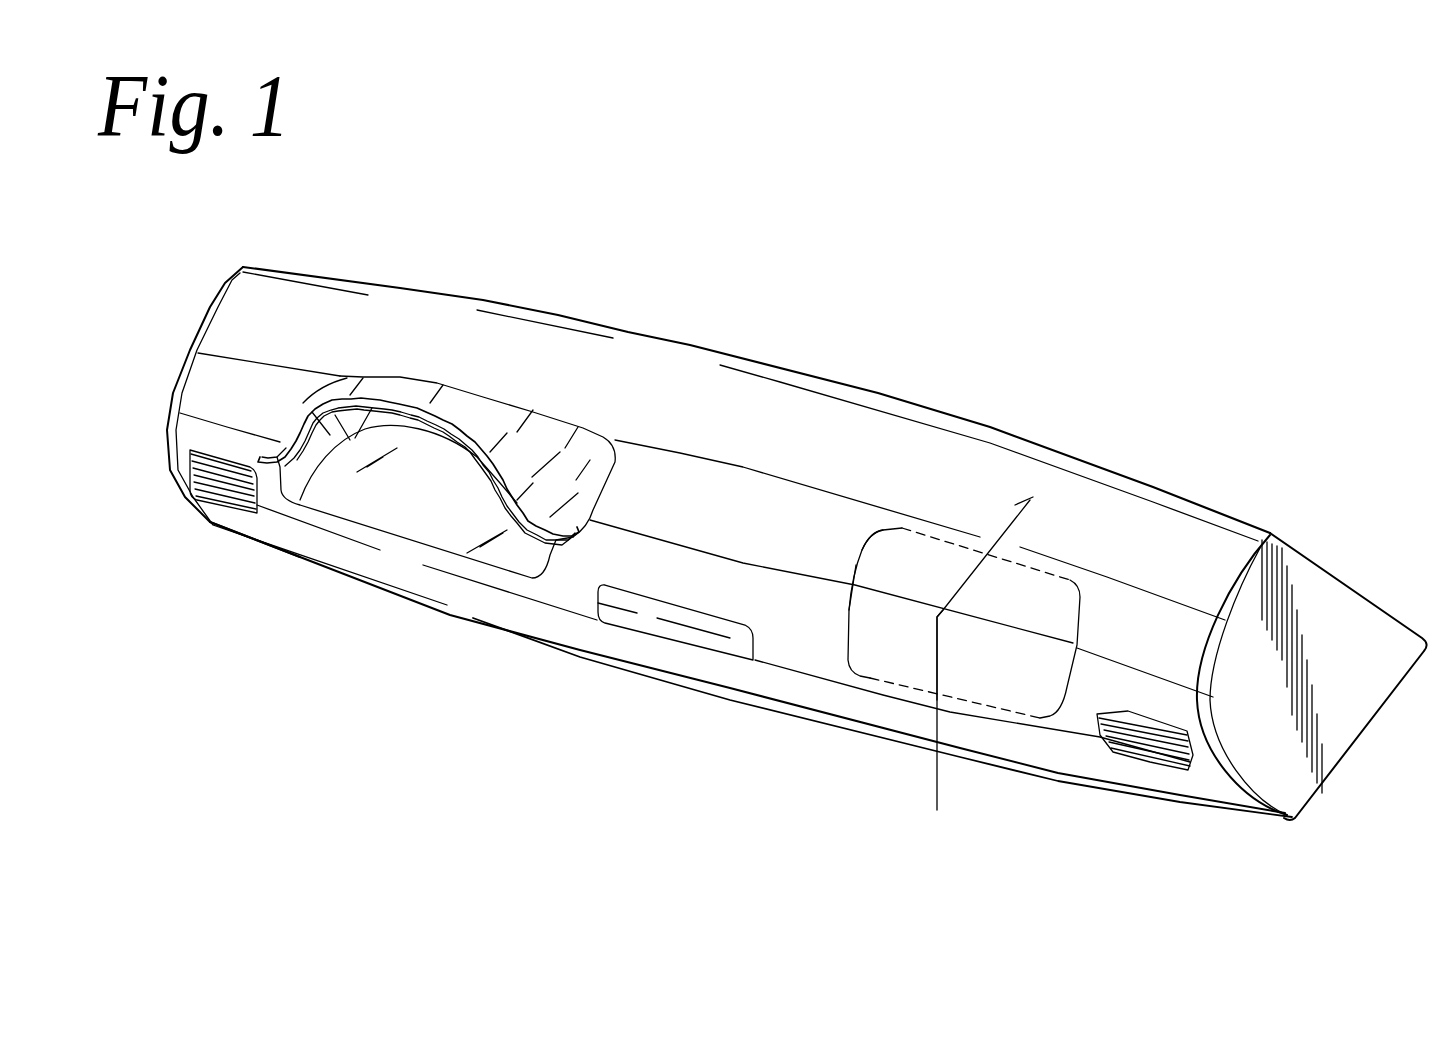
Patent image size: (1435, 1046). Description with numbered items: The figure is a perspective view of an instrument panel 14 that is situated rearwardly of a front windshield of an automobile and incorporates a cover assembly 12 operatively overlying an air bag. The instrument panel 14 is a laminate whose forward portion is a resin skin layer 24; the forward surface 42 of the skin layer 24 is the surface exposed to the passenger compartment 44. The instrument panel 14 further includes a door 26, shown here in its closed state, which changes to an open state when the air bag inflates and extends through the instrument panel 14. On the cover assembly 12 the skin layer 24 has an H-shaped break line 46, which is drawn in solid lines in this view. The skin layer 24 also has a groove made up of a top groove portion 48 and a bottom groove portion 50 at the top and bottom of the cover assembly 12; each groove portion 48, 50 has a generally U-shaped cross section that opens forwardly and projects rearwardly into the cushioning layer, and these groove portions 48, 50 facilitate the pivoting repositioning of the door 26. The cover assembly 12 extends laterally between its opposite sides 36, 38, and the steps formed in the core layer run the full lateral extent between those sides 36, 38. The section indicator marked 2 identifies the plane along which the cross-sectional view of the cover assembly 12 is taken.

The cover assembly 12 is at (1094, 583).
The instrument panel 14 is at (399, 325).
The skin layer 24 is at (953, 582).
The door 26 is at (996, 697).
The opposite side 36 is at (846, 574).
The opposite side 38 is at (1150, 764).
The forward surface 42 is at (685, 367).
The passenger compartment 44 is at (773, 906).
The H-shaped break line 46 is at (890, 593).
The groove portion 48 is at (942, 538).
The groove portion 50 is at (878, 682).
The section line 2- 2 is at (1023, 505).